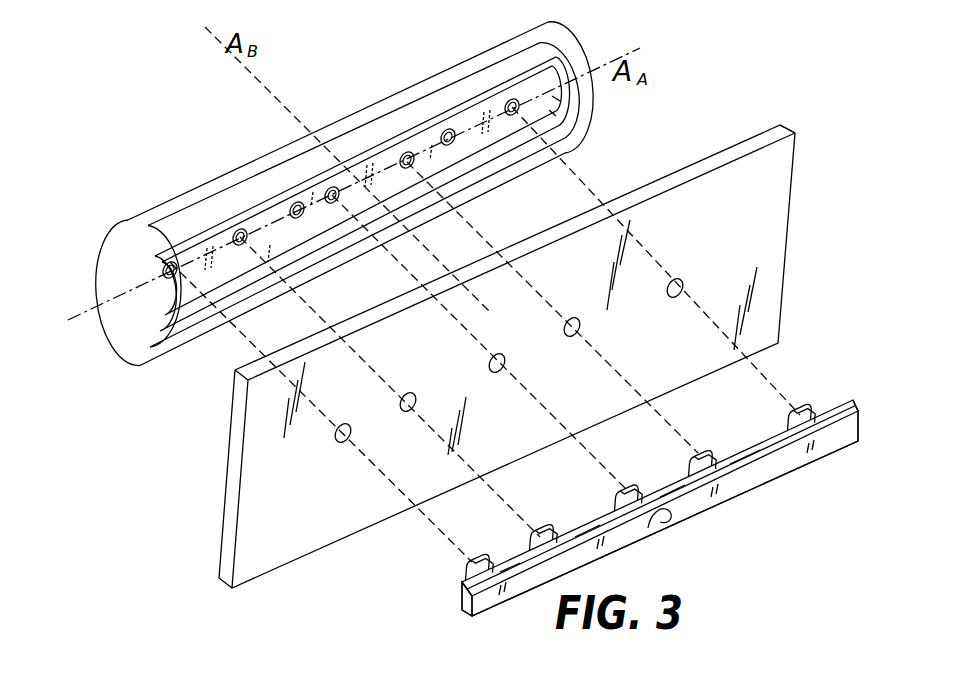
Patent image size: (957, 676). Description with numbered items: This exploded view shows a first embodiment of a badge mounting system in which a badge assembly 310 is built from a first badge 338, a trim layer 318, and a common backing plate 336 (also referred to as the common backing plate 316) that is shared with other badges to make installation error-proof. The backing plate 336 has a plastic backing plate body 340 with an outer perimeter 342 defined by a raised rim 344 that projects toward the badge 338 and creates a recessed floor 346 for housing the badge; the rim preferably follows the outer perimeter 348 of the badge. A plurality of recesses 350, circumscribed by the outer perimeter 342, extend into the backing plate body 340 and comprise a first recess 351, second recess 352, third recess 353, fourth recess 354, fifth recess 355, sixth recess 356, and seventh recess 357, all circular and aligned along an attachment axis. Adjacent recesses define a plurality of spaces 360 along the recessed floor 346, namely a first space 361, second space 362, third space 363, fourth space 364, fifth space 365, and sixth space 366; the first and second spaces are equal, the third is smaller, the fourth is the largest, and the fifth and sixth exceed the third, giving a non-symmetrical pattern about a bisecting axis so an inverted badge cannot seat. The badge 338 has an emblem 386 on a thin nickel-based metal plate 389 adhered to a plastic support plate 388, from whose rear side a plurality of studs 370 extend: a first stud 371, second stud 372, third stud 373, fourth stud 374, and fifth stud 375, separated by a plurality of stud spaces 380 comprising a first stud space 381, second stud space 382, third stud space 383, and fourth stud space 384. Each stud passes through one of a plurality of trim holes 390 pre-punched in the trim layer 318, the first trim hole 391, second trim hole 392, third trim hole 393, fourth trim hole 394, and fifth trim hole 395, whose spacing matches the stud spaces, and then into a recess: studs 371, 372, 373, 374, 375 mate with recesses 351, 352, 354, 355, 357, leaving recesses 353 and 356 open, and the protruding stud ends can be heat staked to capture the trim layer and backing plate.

The badge assembly 310 is at (776, 40).
The common backing plate 316 is at (797, 82).
The trim layer 318 is at (787, 150).
The backing plate 336 is at (533, 32).
The badge 338 is at (361, 638).
The backing plate body 340 is at (150, 358).
The outer perimeter 342 is at (105, 250).
The raised rim 344 is at (583, 58).
The recessed floor 346 is at (587, 124).
The outer perimeter of the badge 348 is at (833, 408).
The plurality of recesses 350 is at (258, 196).
The first recess 351 is at (165, 262).
The second recess 352 is at (238, 229).
The third recess 353 is at (295, 200).
The fourth recess 354 is at (333, 187).
The fifth recess 355 is at (406, 151).
The sixth recess 356 is at (450, 128).
The seventh recess 357 is at (512, 98).
The plurality of spaces 360 is at (201, 345).
The first space 361 is at (208, 262).
The second space 362 is at (272, 258).
The third space 363 is at (312, 203).
The fourth space 364 is at (377, 177).
The fifth space 365 is at (430, 157).
The sixth space 366 is at (487, 127).
The plurality of studs 370 is at (409, 571).
The first stud 371 is at (462, 567).
The second stud 372 is at (531, 530).
The third stud 373 is at (621, 487).
The fourth stud 374 is at (693, 452).
The fifth stud 375 is at (792, 410).
The plurality of stud spaces 380 is at (416, 534).
The first stud space 381 is at (508, 558).
The second stud space 382 is at (581, 530).
The third stud space 383 is at (670, 492).
The fourth stud space 384 is at (737, 458).
The emblem 386 is at (655, 523).
The support plate 388 is at (467, 614).
The metal plate 389 is at (740, 481).
The plurality of trim holes 390 is at (266, 488).
The first trim hole 391 is at (337, 437).
The second trim hole 392 is at (400, 412).
The third trim hole 393 is at (491, 371).
The fourth trim hole 394 is at (562, 337).
The fifth trim hole 395 is at (660, 296).